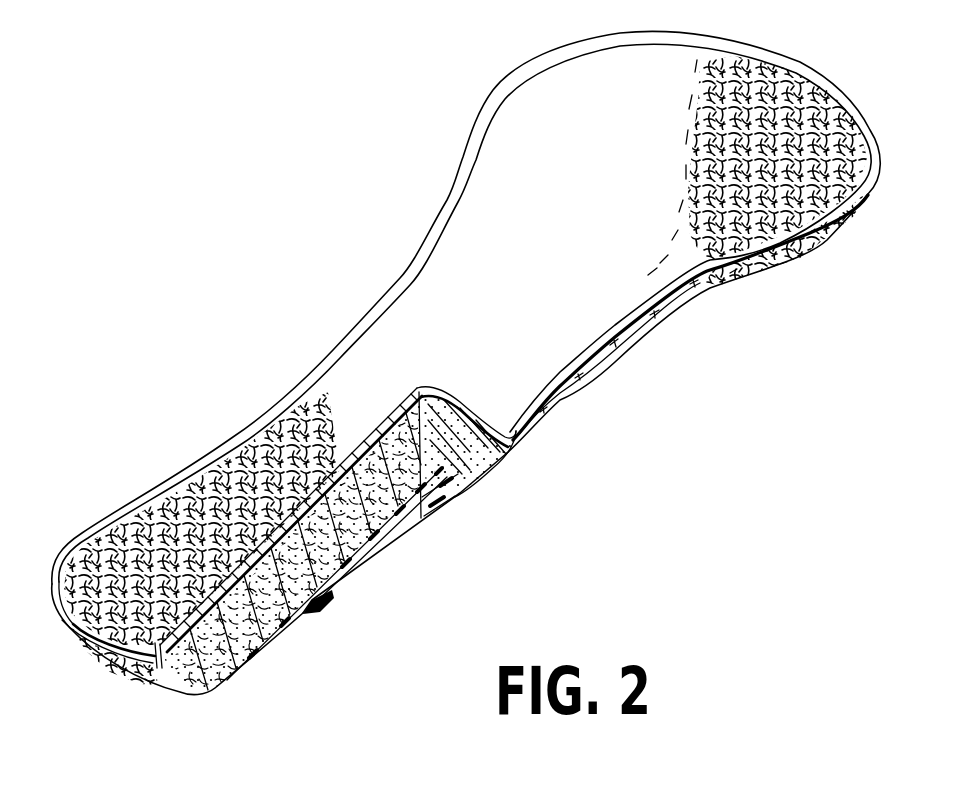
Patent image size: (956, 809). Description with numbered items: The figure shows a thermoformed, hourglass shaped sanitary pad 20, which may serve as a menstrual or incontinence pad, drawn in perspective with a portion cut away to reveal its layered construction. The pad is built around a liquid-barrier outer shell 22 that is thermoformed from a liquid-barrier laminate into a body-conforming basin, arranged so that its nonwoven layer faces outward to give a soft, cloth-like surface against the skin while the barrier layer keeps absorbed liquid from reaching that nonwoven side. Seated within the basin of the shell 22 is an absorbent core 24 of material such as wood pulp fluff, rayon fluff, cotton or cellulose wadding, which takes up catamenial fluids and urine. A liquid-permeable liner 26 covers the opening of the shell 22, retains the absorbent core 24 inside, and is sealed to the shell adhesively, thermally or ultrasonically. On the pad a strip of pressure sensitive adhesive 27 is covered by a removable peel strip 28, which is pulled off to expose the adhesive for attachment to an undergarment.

The sanitary pad 20 is at (290, 251).
The liquid-barrier outer shell 22 is at (153, 668).
The absorbent core 24 is at (242, 612).
The liquid-permeable liner 26 is at (776, 115).
The pressure sensitive adhesive strip 27 is at (400, 515).
The removable peel strip 28 is at (366, 567).